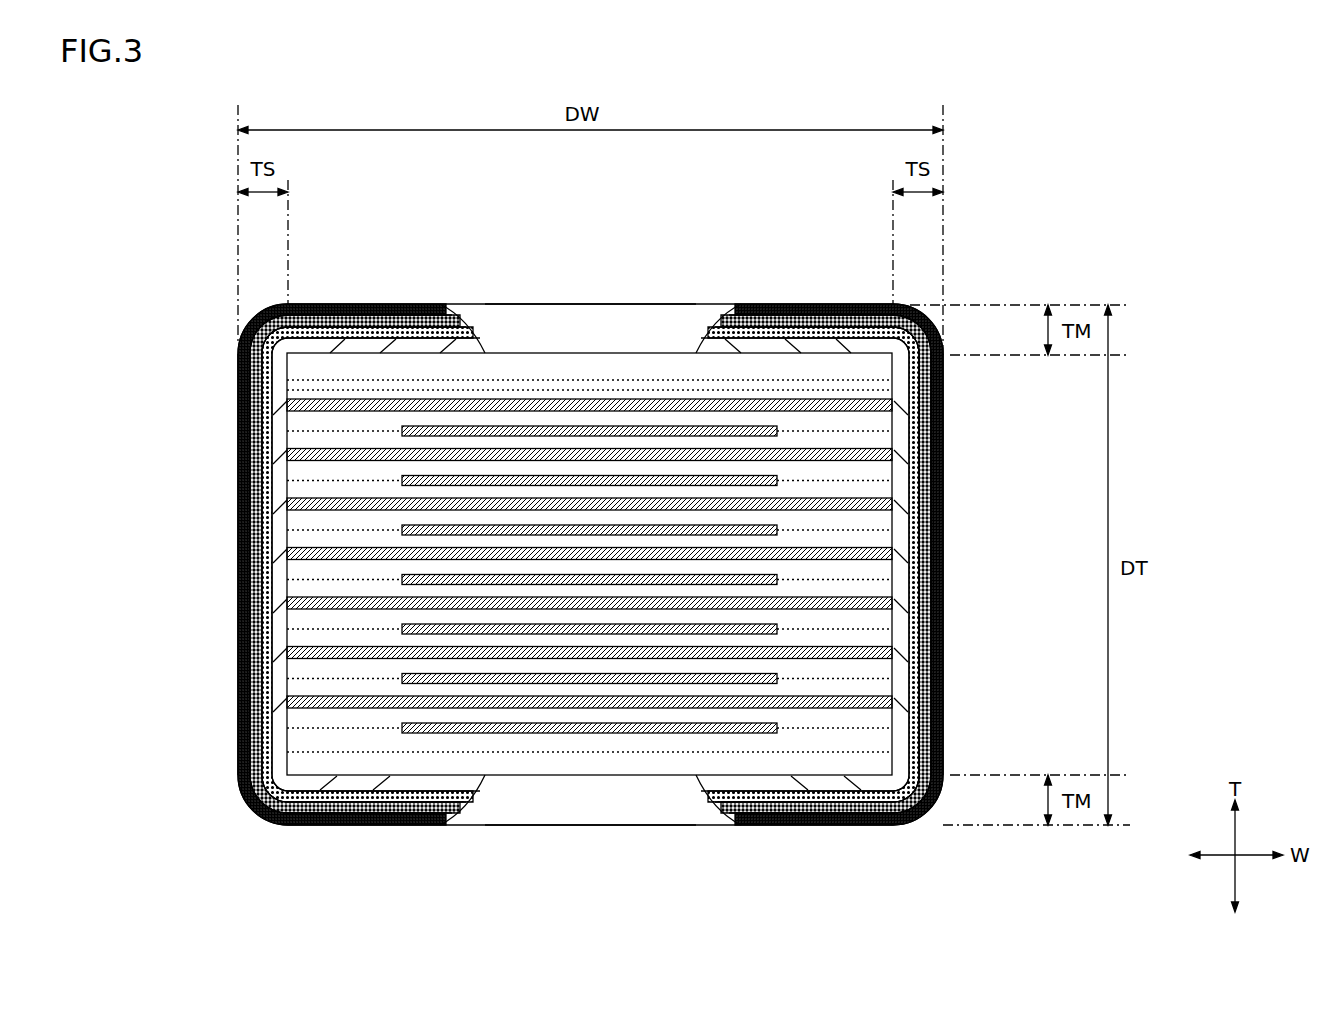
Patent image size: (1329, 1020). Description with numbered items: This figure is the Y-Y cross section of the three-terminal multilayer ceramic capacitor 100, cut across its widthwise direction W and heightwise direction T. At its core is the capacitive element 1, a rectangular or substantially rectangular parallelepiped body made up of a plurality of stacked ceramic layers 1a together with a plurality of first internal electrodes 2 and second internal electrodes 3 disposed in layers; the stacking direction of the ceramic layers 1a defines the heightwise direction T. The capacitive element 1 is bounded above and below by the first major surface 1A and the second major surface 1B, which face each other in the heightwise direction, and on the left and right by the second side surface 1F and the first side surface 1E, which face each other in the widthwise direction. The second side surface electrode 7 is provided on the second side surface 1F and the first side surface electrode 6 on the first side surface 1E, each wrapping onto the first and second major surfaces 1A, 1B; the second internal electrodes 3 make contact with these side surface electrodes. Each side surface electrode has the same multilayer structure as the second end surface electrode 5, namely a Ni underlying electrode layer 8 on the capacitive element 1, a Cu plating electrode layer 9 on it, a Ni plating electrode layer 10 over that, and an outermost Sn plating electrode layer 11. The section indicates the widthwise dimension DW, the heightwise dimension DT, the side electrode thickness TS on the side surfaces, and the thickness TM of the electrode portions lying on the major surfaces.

The three-terminal multilayer ceramic capacitor 100 is at (162, 105).
The capacitive element 1 is at (1018, 375).
The ceramic layer 1a is at (995, 751).
The first major surface 1A is at (633, 797).
The second major surface 1B is at (637, 347).
The first side surface 1E is at (955, 358).
The second side surface 1F is at (205, 348).
The first internal electrode 2 is at (402, 431).
The second internal electrode 3 is at (297, 402).
The second end surface electrode 5 is at (583, 330).
The first side surface electrode 6 is at (752, 208).
The second side surface electrode 7 is at (318, 208).
The Ni underlying electrode layer 8 is at (332, 348).
The Cu plating electrode layer 9 is at (352, 334).
The Ni plating electrode layer 10 is at (382, 322).
The Sn plating electrode layer 11 is at (410, 310).